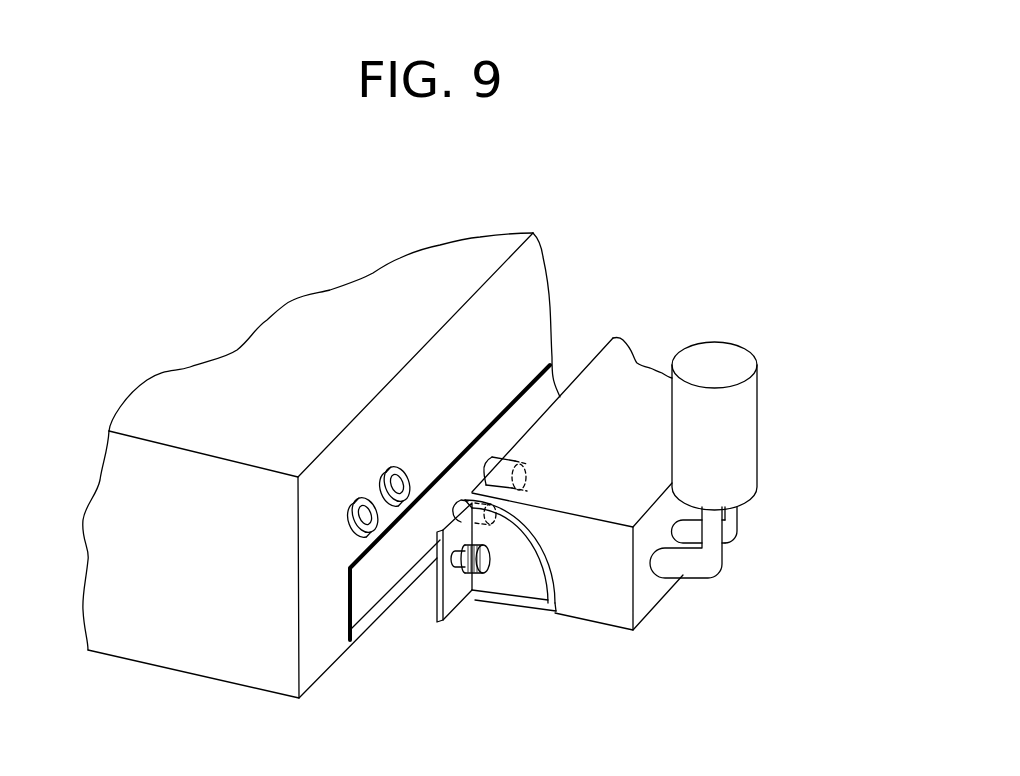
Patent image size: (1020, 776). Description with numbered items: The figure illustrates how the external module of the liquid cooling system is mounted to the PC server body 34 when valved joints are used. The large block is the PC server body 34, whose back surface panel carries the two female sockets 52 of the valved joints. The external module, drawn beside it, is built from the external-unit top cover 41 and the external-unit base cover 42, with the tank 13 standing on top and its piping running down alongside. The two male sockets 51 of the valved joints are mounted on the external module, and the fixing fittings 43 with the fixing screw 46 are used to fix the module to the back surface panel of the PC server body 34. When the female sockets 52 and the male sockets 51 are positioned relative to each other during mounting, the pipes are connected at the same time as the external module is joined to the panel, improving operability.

The tank 13 is at (712, 363).
The PC server body 34 is at (213, 387).
The external-unit top cover 41 is at (625, 377).
The external-unit base cover 42 is at (598, 598).
The fixing fittings 43 is at (512, 583).
The fixing screw 46 is at (462, 578).
The male socket 51 is at (457, 492).
The female socket 52 is at (395, 505).